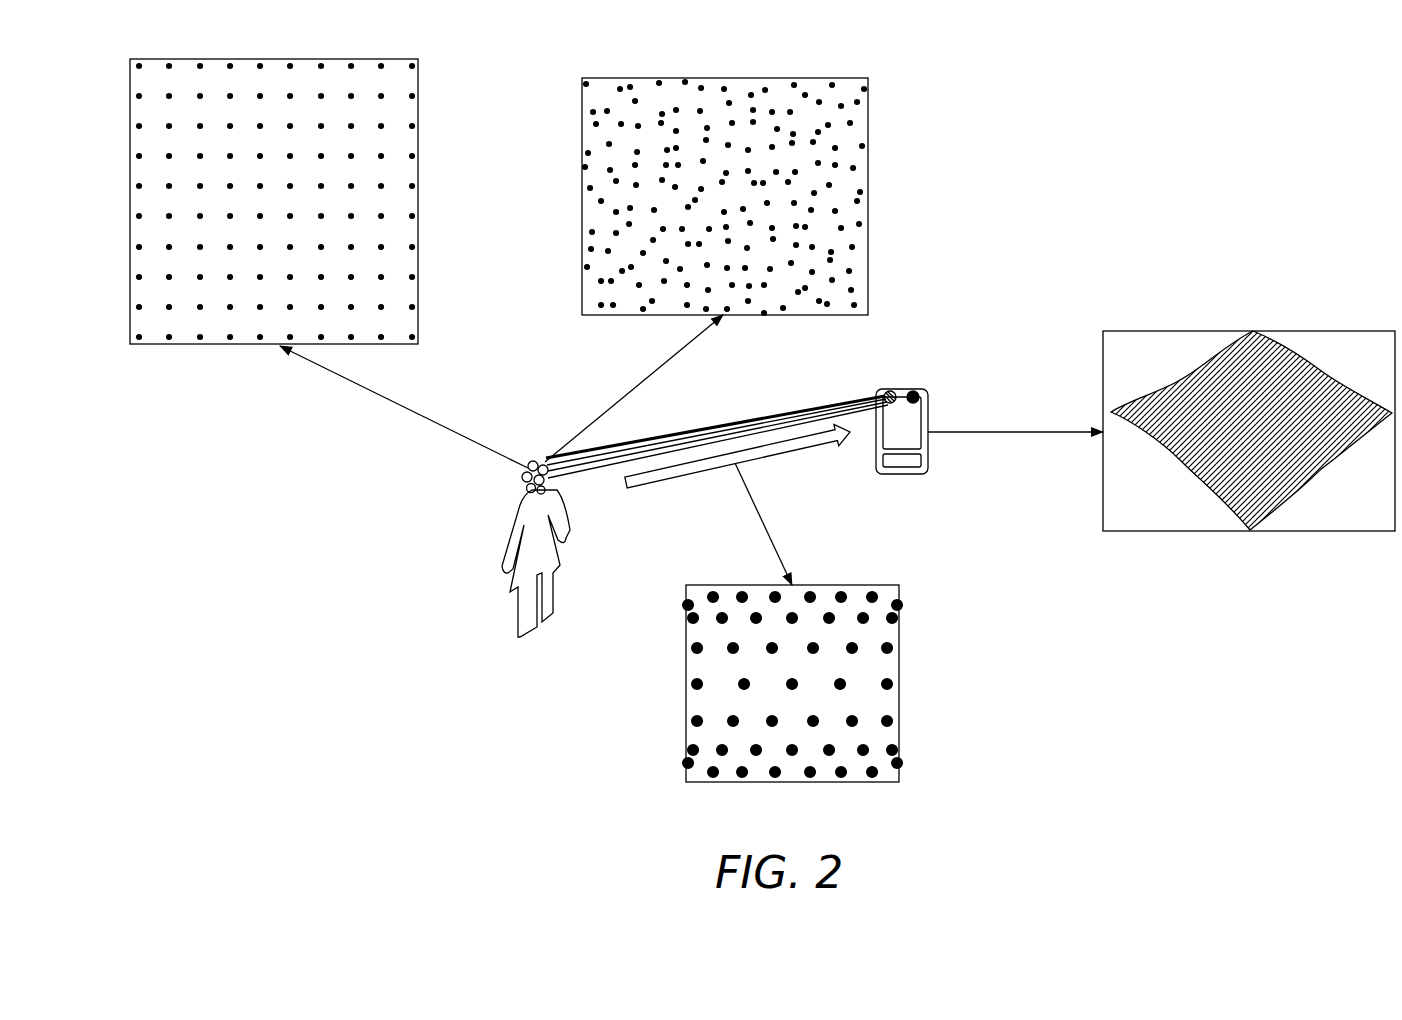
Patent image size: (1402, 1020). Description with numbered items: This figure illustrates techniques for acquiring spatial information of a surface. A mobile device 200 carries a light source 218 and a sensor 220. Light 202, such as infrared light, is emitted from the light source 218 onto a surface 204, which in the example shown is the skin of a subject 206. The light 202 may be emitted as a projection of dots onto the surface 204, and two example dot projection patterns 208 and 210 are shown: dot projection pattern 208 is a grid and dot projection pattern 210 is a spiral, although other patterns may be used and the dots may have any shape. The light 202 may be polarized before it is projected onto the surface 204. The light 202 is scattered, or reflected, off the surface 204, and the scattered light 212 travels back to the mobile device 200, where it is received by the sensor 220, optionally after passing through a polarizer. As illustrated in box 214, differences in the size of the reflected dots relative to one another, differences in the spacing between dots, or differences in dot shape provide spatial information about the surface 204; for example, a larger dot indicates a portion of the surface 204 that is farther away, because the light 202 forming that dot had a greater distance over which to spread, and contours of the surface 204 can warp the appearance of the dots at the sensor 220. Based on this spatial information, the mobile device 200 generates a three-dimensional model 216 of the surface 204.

The mobile device 200 is at (930, 455).
The light 202 is at (746, 420).
The surface 204 is at (522, 478).
The subject 206 is at (502, 570).
The dot projection pattern 208 is at (413, 412).
The dot projection pattern 210 is at (648, 372).
The scattered light 212 is at (778, 455).
The box 214 is at (758, 517).
The 3D model 216 is at (1178, 331).
The light source 218 is at (888, 392).
The sensor 220 is at (915, 392).